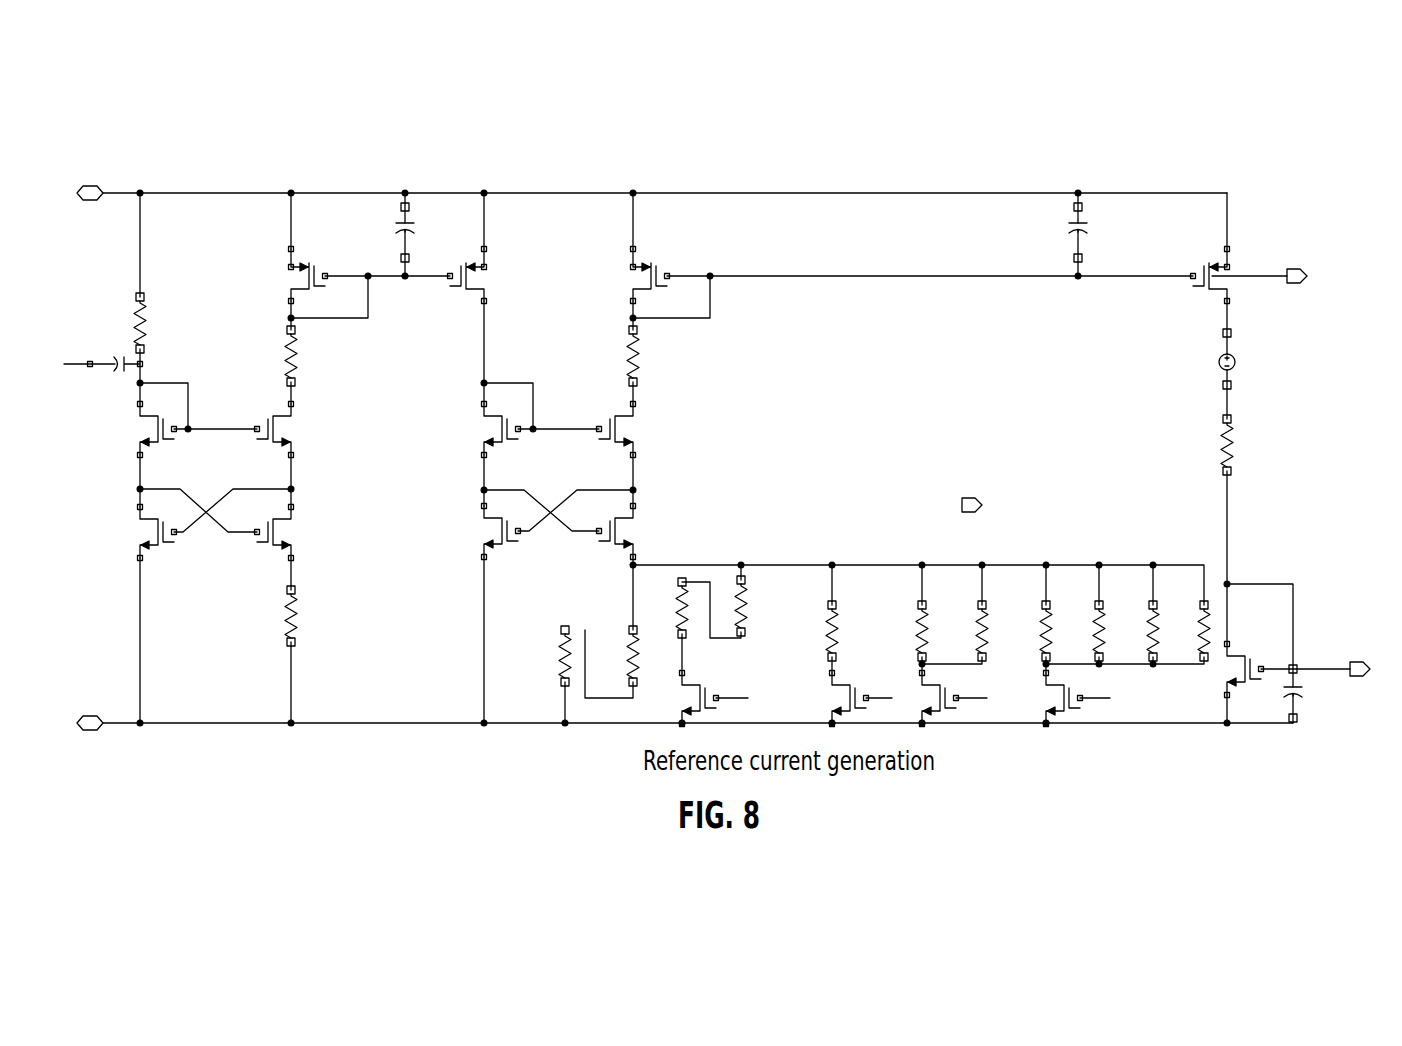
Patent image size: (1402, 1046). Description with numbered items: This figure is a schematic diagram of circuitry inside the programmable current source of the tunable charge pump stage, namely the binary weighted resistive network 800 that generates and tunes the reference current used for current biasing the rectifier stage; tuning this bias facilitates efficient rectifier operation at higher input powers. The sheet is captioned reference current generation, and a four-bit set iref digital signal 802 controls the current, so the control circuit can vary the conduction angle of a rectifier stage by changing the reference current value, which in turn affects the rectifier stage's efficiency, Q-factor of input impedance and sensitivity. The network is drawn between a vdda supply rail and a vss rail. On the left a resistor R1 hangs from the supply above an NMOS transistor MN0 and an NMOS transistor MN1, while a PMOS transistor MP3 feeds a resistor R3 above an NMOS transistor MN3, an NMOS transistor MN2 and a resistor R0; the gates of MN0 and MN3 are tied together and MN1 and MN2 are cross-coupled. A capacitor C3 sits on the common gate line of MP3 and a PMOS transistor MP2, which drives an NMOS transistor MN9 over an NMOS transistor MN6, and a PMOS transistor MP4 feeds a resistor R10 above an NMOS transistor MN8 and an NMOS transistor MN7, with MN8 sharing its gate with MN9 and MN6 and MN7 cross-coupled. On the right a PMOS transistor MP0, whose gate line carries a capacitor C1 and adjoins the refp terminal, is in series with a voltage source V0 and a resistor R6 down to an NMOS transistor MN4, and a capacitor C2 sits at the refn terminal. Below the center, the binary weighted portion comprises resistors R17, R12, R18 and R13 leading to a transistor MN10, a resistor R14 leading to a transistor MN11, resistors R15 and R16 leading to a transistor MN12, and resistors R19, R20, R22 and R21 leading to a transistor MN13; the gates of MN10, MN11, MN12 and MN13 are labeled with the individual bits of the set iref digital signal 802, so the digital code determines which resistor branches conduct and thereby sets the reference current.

The binary weighted resistive network 800 is at (715, 404).
The set iref 3:0 digital signal 802 is at (858, 484).
The resistor R1 is at (101, 322).
The resistor R3 is at (247, 356).
The resistor R0 is at (257, 616).
The resistor R10 is at (592, 356).
The resistor R6 is at (1226, 441).
The resistor R12 is at (614, 656).
The resistor R13 is at (763, 604).
The resistor R14 is at (810, 634).
The resistor R15 is at (901, 631).
The resistor R16 is at (961, 631).
The resistor R17 is at (541, 674).
The resistor R18 is at (663, 605).
The resistor R19 is at (1023, 631).
The resistor R20 is at (1081, 631).
The resistor R21 is at (1186, 631).
The resistor R22 is at (1134, 631).
The capacitor C1 is at (1098, 234).
The capacitor C2 is at (1311, 695).
The capacitor C3 is at (426, 234).
The voltage source V0 is at (1262, 363).
The PMOS transistor MP0 is at (1233, 273).
The PMOS transistor MP2 is at (494, 275).
The PMOS transistor MP3 is at (285, 275).
The PMOS transistor MP4 is at (627, 275).
The NMOS transistor MN0 is at (129, 430).
The NMOS transistor MN1 is at (129, 533).
The NMOS transistor MN2 is at (303, 533).
The NMOS transistor MN3 is at (303, 430).
The NMOS transistor MN4 is at (1253, 665).
The NMOS transistor MN6 is at (478, 532).
The NMOS transistor MN7 is at (639, 532).
The NMOS transistor MN8 is at (639, 430).
The NMOS transistor MN9 is at (478, 430).
The NMOS switch transistor MN10 is at (705, 699).
The NMOS switch transistor MN11 is at (848, 699).
The NMOS switch transistor MN12 is at (939, 698).
The NMOS switch transistor MN13 is at (1069, 698).